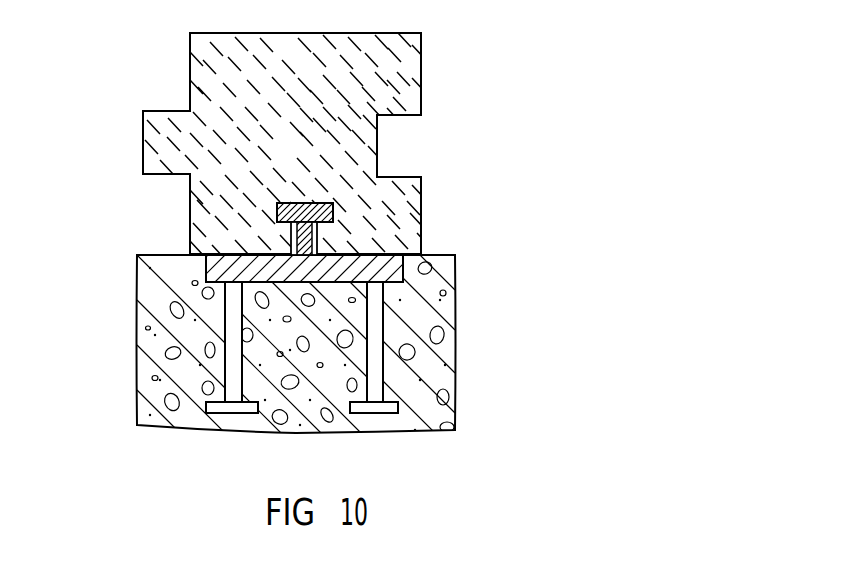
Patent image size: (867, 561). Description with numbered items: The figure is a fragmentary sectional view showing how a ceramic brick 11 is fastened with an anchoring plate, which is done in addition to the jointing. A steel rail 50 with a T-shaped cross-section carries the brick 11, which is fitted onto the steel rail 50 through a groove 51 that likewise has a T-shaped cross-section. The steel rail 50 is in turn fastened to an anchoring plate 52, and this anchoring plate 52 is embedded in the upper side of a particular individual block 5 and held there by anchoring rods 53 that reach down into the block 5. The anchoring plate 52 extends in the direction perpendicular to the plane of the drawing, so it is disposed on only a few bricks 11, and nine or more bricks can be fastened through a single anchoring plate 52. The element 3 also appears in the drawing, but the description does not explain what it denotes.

The stepped block 11 is at (397, 70).
The bolt head 50 is at (287, 212).
The bolt shank 51 is at (318, 237).
The anchor plate 52 is at (222, 270).
The anchor beam 53 is at (375, 378).
The concrete foundation 5 is at (455, 310).
The floor 3 is at (138, 363).